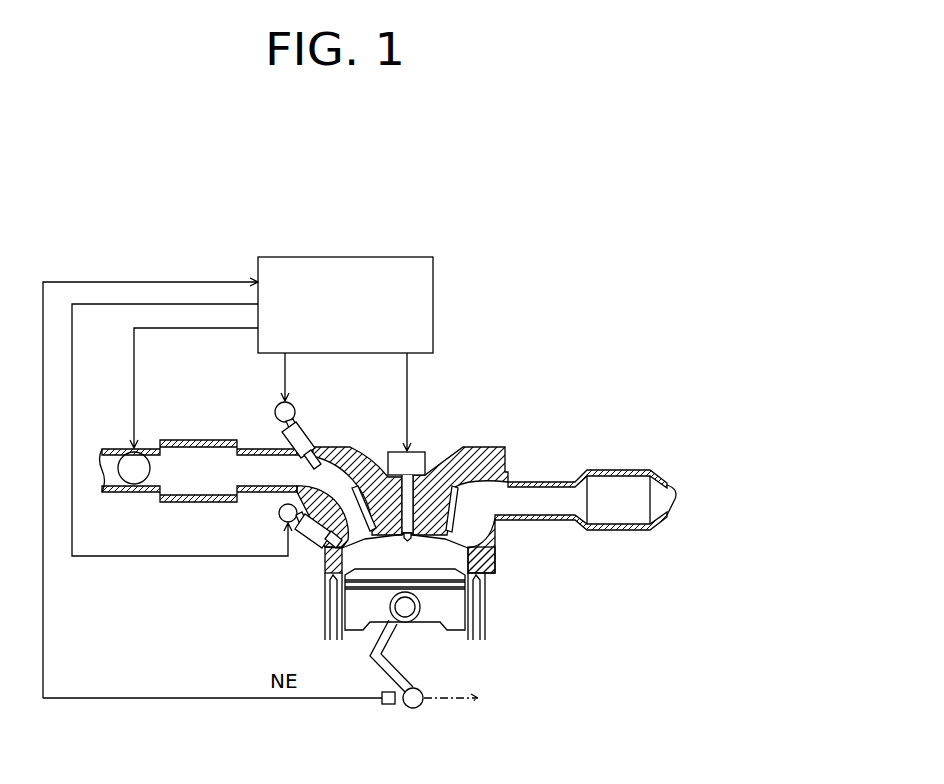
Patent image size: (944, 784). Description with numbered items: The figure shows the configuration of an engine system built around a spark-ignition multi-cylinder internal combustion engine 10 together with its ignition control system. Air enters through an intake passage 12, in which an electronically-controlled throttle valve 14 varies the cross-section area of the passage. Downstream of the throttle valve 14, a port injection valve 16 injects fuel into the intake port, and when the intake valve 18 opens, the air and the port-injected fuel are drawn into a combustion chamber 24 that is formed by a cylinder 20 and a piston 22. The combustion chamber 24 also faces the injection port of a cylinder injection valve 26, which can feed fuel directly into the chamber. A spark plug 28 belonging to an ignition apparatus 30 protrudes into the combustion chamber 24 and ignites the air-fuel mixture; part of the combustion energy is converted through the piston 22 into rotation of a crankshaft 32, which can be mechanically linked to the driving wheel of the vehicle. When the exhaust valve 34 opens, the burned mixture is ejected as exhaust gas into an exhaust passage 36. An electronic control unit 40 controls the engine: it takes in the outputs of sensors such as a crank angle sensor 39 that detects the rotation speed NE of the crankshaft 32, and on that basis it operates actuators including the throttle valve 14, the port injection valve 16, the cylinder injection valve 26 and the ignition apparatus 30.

The internal combustion engine 10 is at (503, 414).
The intake passage 12 is at (254, 490).
The throttle valve 14 is at (141, 455).
The port injection valve 16 is at (307, 431).
The intake valve 18 is at (354, 508).
The cylinder 20 is at (324, 588).
The piston 22 is at (462, 604).
The combustion chamber 24 is at (458, 561).
The cylinder injection valve 26 is at (303, 540).
The spark plug 28 is at (404, 539).
The ignition apparatus 30 is at (427, 437).
The crankshaft 32 is at (421, 689).
The exhaust valve 34 is at (468, 509).
The exhaust passage 36 is at (538, 513).
The crank angle sensor 39 is at (388, 705).
The electronic control unit (ECU) 40 is at (433, 303).